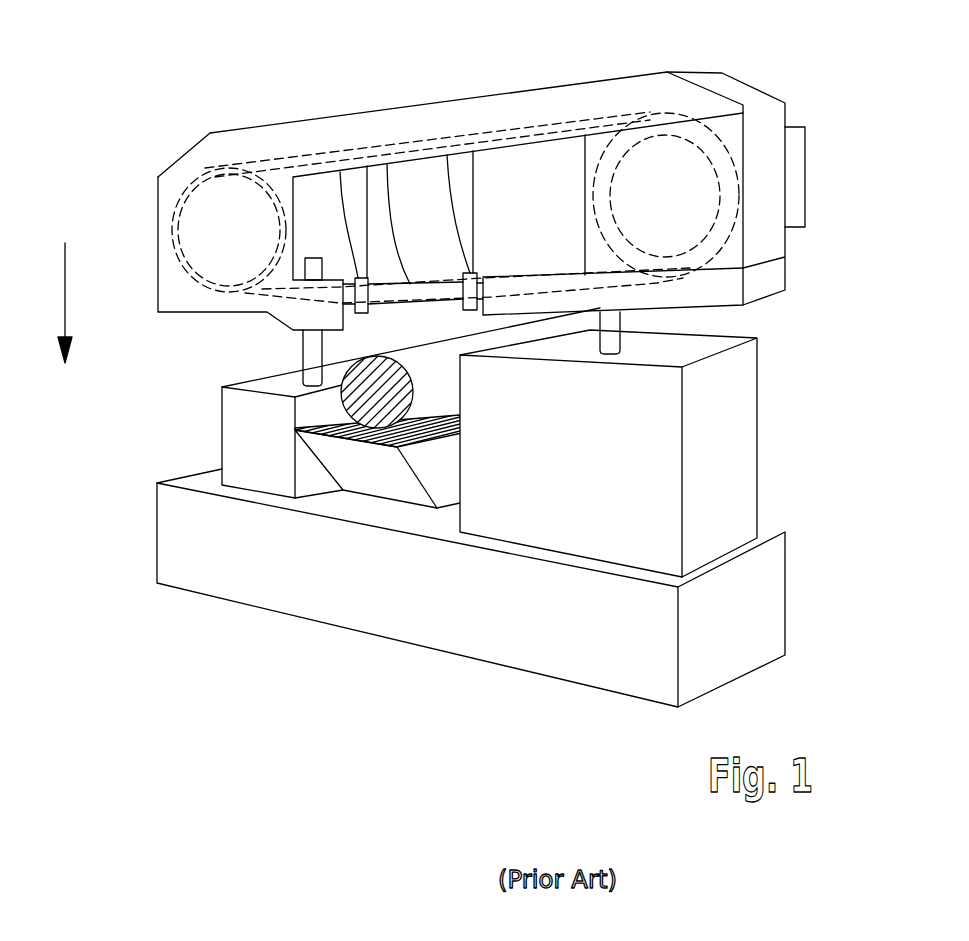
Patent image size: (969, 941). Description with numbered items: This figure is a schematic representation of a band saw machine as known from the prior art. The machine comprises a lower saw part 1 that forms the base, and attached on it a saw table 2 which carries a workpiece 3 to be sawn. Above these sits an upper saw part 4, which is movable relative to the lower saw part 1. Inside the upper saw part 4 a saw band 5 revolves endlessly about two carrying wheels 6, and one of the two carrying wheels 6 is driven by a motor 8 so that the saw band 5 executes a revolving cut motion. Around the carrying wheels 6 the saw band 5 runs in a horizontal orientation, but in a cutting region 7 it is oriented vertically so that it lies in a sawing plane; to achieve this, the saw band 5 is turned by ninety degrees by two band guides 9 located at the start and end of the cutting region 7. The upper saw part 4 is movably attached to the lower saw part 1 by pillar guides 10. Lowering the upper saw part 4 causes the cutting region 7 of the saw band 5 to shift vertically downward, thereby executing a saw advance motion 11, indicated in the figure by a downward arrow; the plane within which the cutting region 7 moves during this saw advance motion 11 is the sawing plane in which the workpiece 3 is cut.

The lower saw part 1 is at (213, 580).
The saw table 2 is at (365, 478).
The workpiece 3 is at (352, 395).
The upper saw part 4 is at (743, 95).
The saw band 5 is at (413, 142).
The carrying wheels 6 is at (202, 193).
The cutting region 7 is at (392, 333).
The motor 8 is at (795, 212).
The band guides 9 is at (470, 292).
The pillar guides 10 is at (303, 340).
The saw advance motion 11 is at (65, 305).